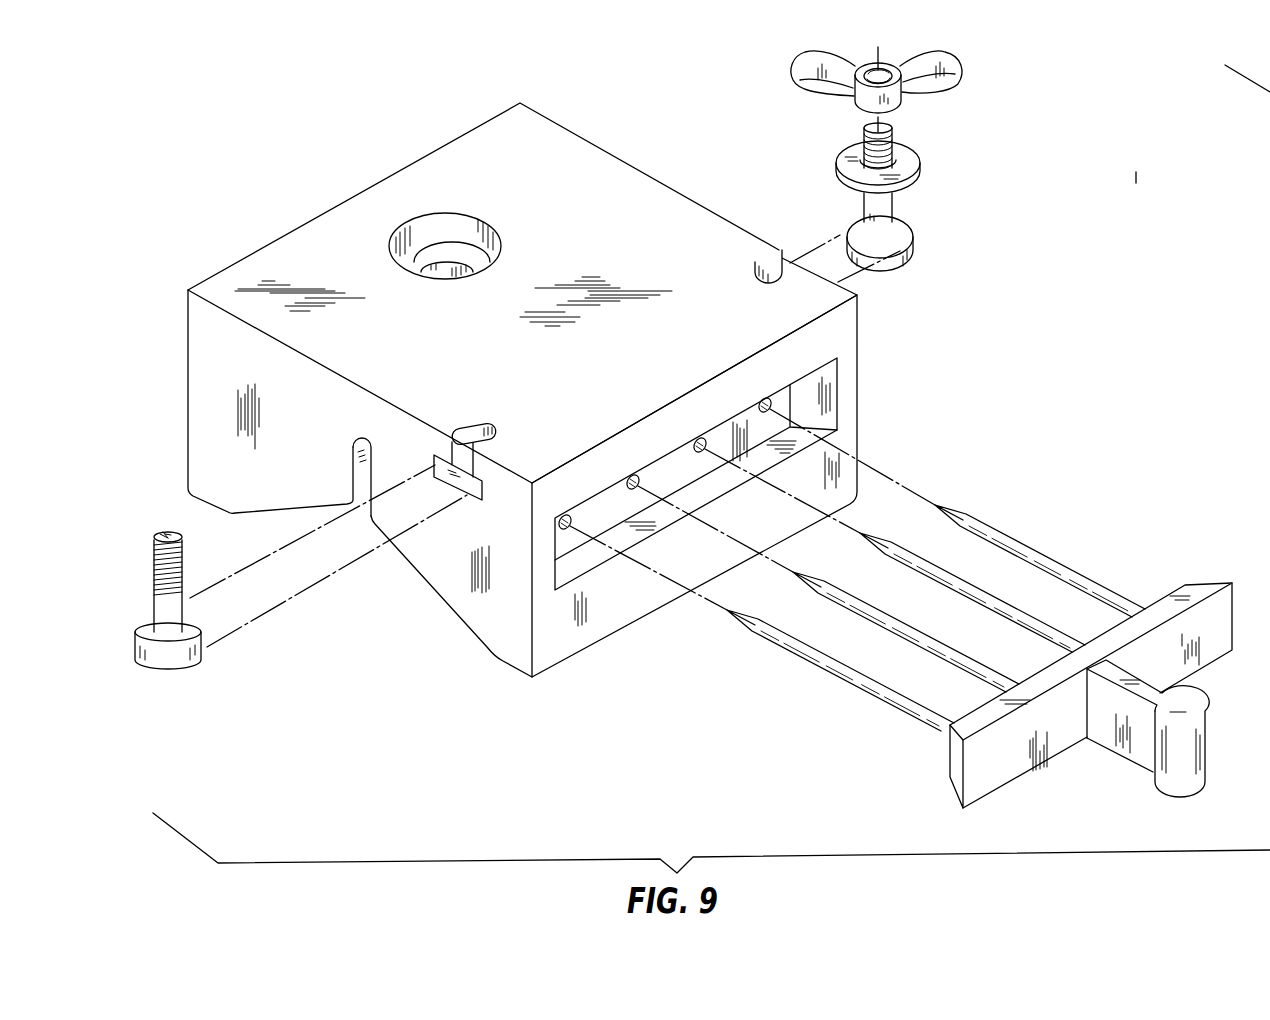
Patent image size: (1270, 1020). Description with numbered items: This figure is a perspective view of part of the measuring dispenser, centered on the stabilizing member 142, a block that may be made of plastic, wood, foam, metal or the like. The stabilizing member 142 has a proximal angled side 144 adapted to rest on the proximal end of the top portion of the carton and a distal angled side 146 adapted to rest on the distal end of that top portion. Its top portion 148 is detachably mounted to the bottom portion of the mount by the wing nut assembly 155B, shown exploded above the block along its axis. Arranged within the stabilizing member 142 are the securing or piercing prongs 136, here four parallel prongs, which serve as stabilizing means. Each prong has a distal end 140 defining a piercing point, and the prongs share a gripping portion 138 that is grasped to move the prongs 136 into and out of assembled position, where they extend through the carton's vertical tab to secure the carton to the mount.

The stabilizing member 142 is at (522, 390).
The top portion 148 is at (560, 148).
The proximal angled side 144 is at (443, 603).
The distal angled side 146 is at (287, 513).
The distal end 140 is at (936, 572).
The securing or piercing prongs 136 is at (1020, 547).
The gripping portion 138 is at (1115, 708).
The wing nut assembly 155B is at (972, 116).